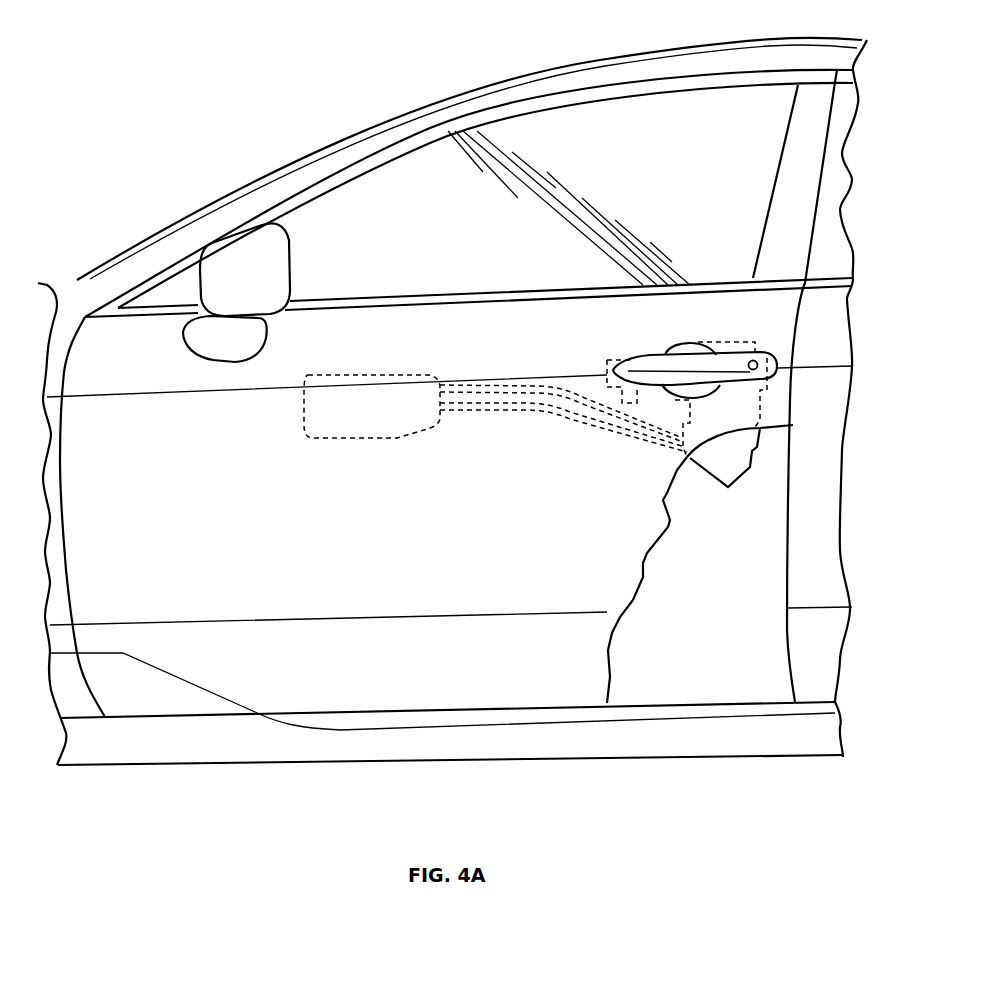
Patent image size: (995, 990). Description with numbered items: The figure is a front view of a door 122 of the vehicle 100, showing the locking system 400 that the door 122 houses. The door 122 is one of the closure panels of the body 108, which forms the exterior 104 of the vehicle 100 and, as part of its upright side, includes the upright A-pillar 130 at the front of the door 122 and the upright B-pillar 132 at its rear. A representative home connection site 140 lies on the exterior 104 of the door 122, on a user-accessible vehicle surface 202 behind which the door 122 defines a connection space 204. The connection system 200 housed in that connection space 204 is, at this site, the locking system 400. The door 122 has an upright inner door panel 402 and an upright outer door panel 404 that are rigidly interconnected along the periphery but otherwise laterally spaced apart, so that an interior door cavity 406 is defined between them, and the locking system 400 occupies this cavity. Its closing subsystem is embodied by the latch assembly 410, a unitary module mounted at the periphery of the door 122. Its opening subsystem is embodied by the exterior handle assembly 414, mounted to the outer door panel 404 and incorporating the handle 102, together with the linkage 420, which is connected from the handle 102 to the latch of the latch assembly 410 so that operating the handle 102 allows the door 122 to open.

The vehicle 100 is at (245, 180).
The handle 102 is at (628, 362).
The exterior 104 is at (249, 669).
The body 108 is at (450, 98).
The door 122 is at (158, 345).
The A-pillar 130 is at (108, 430).
The B-pillar 132 is at (757, 548).
The connection site 140 is at (633, 345).
The connection system 200 is at (762, 310).
The vehicle surface 202 is at (617, 462).
The connection space 204 is at (748, 480).
The locking system 400 is at (732, 386).
The inner door panel 402 is at (668, 685).
The outer door panel 404 is at (353, 687).
The interior door cavity 406 is at (761, 435).
The latch assembly 410 is at (703, 473).
The handle assembly 414 is at (672, 347).
The linkage 420 is at (520, 413).